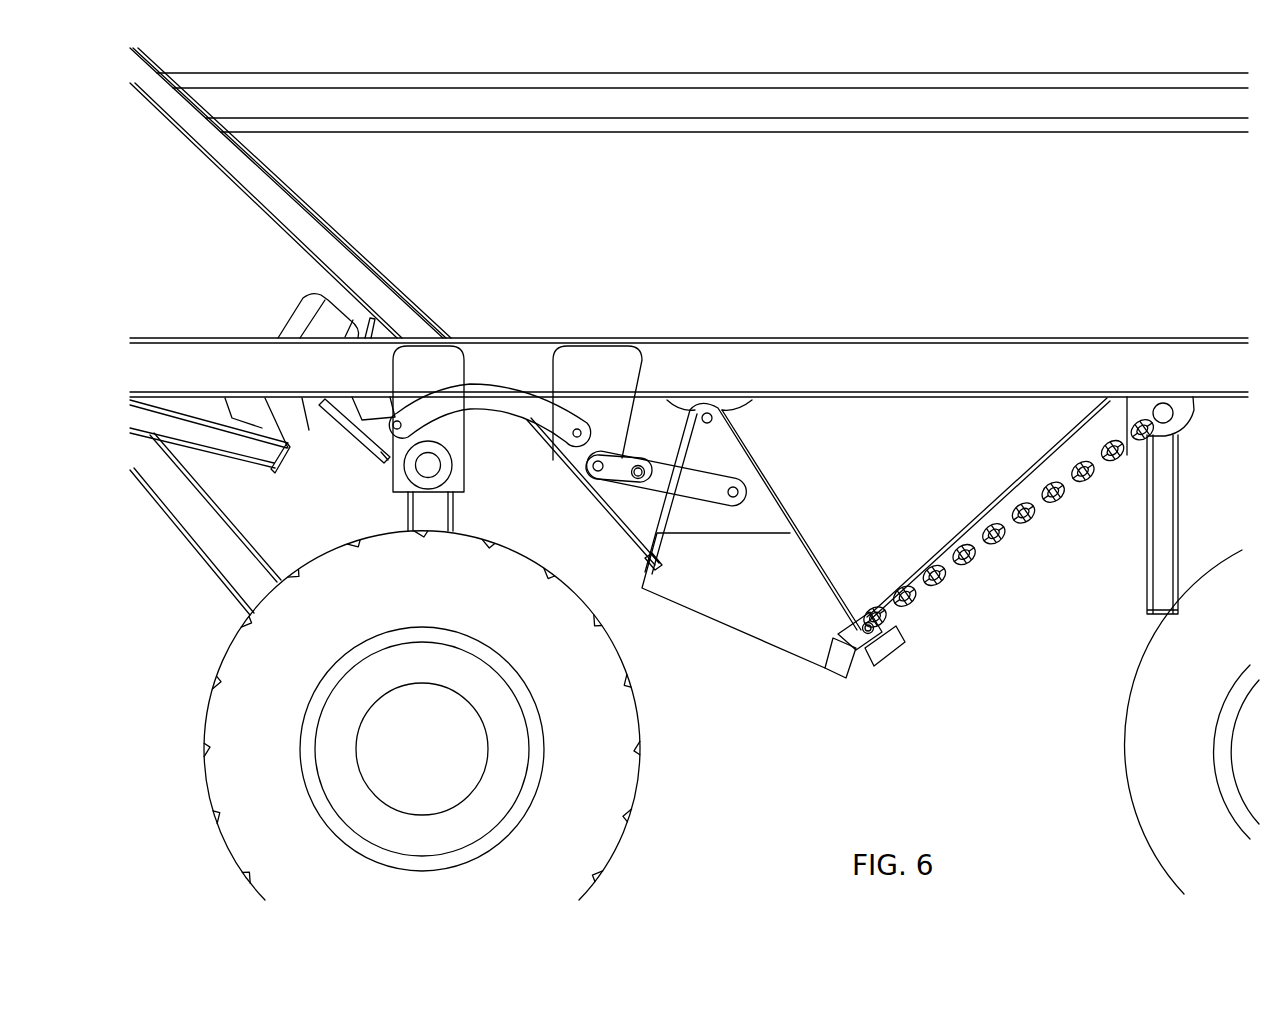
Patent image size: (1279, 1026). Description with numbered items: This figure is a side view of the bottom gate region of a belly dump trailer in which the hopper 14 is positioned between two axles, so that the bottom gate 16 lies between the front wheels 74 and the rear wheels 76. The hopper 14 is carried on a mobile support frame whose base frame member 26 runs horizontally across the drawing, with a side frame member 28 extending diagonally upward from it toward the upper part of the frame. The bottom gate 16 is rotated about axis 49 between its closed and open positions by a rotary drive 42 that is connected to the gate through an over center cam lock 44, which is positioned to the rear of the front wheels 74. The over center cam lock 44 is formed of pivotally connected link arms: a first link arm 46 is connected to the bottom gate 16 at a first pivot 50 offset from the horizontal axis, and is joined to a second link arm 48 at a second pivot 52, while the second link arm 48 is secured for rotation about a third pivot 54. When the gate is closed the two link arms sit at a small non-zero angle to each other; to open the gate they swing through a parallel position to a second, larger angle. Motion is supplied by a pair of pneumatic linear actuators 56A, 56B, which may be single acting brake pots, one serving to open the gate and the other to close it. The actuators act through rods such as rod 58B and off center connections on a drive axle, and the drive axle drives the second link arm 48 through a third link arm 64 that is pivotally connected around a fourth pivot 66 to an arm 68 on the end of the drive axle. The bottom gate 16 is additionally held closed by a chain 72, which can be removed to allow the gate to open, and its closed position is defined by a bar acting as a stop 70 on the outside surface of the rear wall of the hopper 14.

The hopper 14 is at (368, 178).
The bottom gate 16 is at (747, 622).
The base frame member 26 is at (858, 347).
The side frame member 28 is at (318, 233).
The rotary drive 42 is at (298, 486).
The over center cam lock 44 is at (525, 352).
The first link arm 46 is at (704, 494).
The second link arm 48 is at (617, 476).
The axis 49 is at (709, 413).
The first pivot 50 is at (746, 486).
The second pivot 52 is at (639, 466).
The third pivot 54 is at (600, 461).
The pneumatic linear actuator 56A is at (303, 316).
The pneumatic linear actuator 56B is at (221, 410).
The rod 58B is at (323, 430).
The third link arm 64 is at (503, 403).
The fourth pivot 66 is at (402, 423).
The arm 68 is at (467, 477).
The stop 70 is at (885, 648).
The chain 72 is at (964, 560).
The front wheels 74 is at (575, 808).
The rear wheels 76 is at (1162, 764).